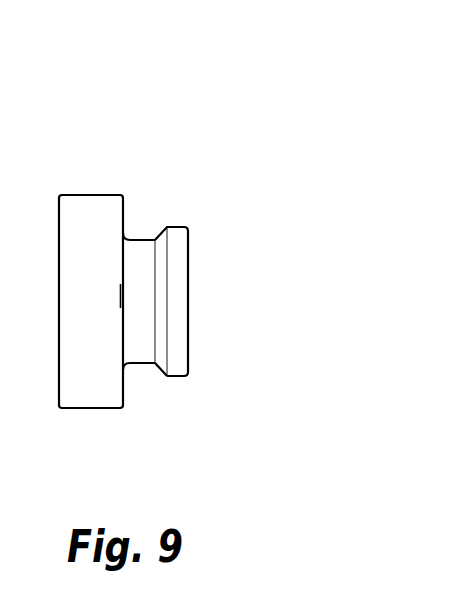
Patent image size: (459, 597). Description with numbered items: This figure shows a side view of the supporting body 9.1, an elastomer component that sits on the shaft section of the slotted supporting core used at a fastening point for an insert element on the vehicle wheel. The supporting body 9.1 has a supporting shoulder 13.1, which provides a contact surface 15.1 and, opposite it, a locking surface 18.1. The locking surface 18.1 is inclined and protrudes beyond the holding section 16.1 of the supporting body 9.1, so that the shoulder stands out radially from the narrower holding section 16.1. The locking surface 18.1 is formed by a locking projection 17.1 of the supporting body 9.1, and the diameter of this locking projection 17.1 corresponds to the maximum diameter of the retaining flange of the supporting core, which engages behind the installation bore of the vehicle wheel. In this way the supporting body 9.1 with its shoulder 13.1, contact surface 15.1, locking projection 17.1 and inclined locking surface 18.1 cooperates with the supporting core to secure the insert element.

The supporting body 9.1 is at (97, 162).
The supporting shoulder 13.1 is at (83, 197).
The contact surface 15.1 is at (131, 218).
The holding section 16.1 is at (143, 365).
The locking projection 17.1 is at (172, 380).
The locking surface 18.1 is at (155, 228).